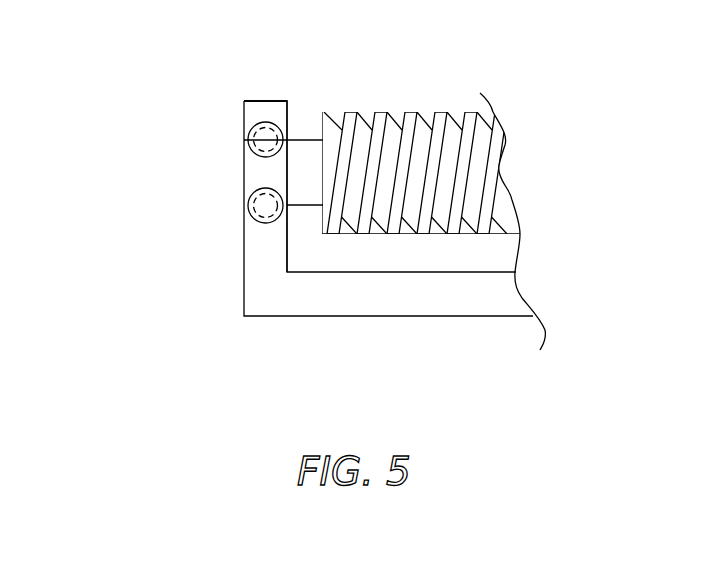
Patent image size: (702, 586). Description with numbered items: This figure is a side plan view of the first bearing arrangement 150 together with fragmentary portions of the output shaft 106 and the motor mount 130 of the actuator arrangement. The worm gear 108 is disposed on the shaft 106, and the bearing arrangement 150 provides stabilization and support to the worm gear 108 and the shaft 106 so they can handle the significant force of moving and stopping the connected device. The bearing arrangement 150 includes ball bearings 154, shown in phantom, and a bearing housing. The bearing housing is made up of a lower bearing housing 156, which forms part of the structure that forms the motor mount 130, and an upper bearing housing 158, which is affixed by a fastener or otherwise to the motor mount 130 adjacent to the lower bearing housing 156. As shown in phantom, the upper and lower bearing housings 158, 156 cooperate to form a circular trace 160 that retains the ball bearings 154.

The first bearing arrangement 150 is at (178, 96).
The motor mount 130 is at (382, 316).
The lower bearing housing 156 is at (244, 232).
The upper bearing housing 158 is at (250, 101).
The circular trace 160 is at (265, 108).
The ball bearings 154 is at (250, 145).
The output shaft 106 is at (302, 138).
The worm gear 108 is at (412, 112).